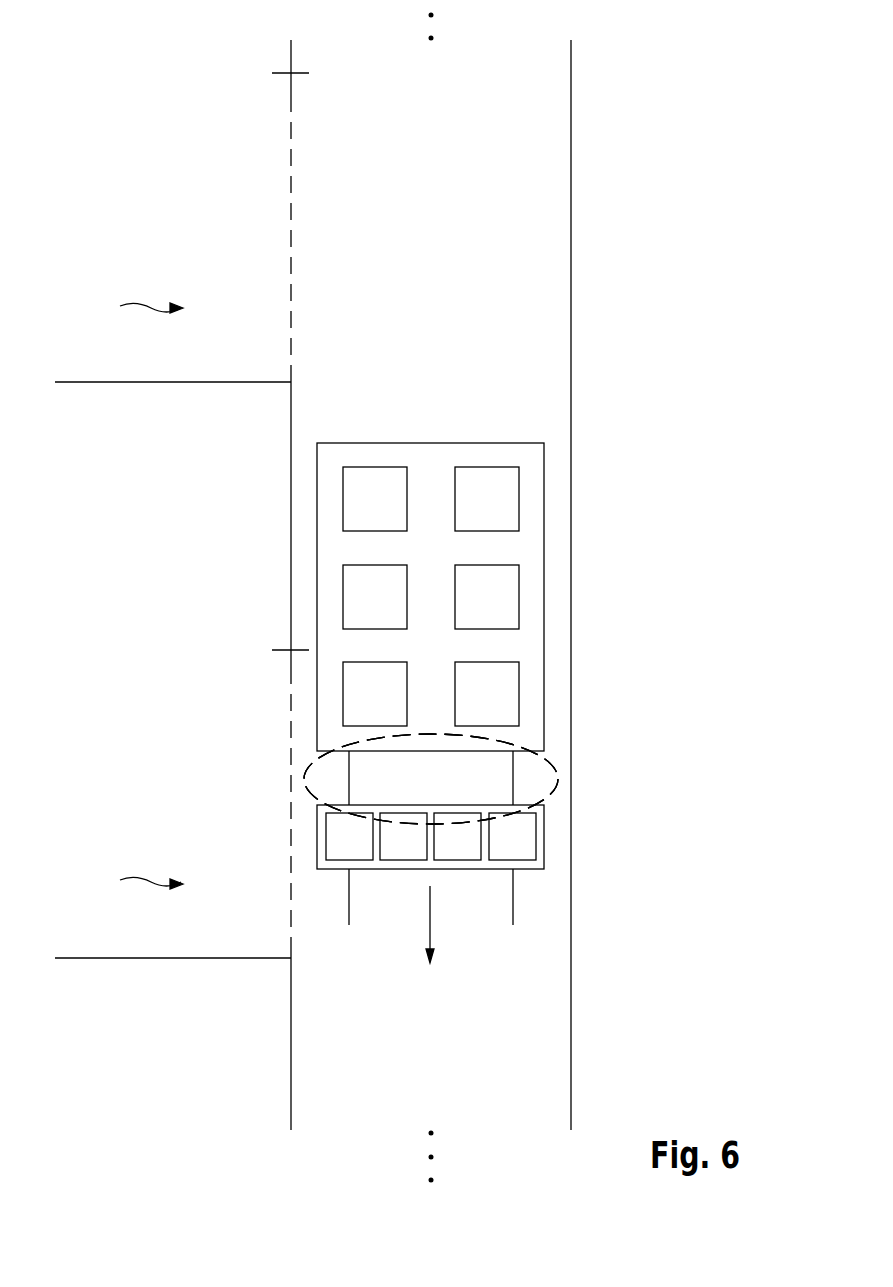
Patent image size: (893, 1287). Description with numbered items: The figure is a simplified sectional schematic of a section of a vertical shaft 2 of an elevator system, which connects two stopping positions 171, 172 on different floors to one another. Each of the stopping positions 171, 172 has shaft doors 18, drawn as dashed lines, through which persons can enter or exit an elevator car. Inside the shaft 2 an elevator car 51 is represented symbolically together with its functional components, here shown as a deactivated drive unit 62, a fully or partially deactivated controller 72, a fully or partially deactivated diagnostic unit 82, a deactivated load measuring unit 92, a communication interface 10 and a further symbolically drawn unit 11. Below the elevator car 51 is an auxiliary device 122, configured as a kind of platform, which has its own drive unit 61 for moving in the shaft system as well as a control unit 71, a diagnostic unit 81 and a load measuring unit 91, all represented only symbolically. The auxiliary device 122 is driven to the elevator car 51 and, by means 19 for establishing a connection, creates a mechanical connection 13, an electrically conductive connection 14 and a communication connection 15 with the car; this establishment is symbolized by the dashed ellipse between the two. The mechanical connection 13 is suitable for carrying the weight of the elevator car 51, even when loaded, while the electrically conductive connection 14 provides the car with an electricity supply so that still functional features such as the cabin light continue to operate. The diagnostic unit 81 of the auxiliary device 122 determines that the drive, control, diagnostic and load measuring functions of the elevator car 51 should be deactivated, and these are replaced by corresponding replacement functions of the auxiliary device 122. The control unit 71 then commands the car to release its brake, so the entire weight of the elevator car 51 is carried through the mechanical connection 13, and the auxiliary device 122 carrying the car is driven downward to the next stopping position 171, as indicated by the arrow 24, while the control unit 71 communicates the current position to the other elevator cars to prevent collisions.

The vertical shaft 2 is at (543, 120).
The shaft doors 18 is at (290, 229).
The stopping position 172 is at (131, 303).
The stopping position 171 is at (131, 878).
The elevator car 51 is at (544, 597).
The deactivated drive unit 62 is at (389, 514).
The deactivated controller 72 is at (501, 514).
The deactivated diagnostic unit 82 is at (389, 612).
The deactivated load measuring unit 92 is at (501, 612).
The communication interface 10 is at (389, 709).
The processing unit 11 is at (501, 709).
The mechanical connection 13 is at (558, 779).
The electrically conductive connection 14 is at (431, 779).
The communication connection 15 is at (431, 779).
The means for establishing a connection 19 is at (352, 779).
The auxiliary device 122 is at (544, 836).
The drive unit 61 is at (362, 852).
The control unit 71 is at (416, 852).
The diagnostic unit 81 is at (470, 852).
The load measuring unit 91 is at (525, 852).
The arrow 24 is at (432, 931).